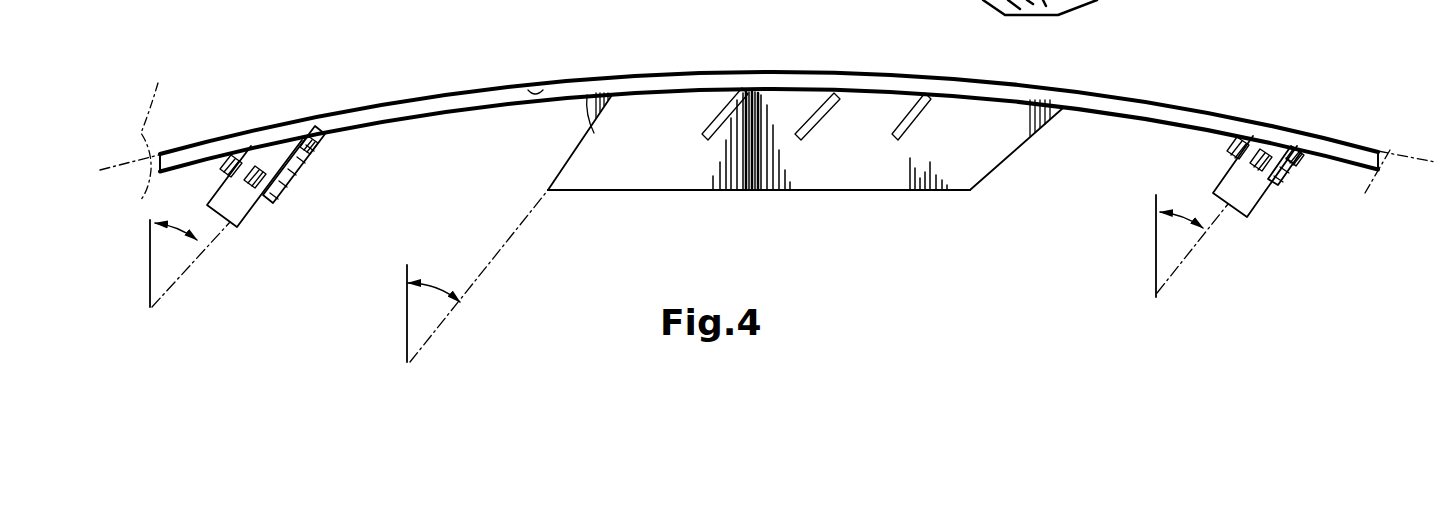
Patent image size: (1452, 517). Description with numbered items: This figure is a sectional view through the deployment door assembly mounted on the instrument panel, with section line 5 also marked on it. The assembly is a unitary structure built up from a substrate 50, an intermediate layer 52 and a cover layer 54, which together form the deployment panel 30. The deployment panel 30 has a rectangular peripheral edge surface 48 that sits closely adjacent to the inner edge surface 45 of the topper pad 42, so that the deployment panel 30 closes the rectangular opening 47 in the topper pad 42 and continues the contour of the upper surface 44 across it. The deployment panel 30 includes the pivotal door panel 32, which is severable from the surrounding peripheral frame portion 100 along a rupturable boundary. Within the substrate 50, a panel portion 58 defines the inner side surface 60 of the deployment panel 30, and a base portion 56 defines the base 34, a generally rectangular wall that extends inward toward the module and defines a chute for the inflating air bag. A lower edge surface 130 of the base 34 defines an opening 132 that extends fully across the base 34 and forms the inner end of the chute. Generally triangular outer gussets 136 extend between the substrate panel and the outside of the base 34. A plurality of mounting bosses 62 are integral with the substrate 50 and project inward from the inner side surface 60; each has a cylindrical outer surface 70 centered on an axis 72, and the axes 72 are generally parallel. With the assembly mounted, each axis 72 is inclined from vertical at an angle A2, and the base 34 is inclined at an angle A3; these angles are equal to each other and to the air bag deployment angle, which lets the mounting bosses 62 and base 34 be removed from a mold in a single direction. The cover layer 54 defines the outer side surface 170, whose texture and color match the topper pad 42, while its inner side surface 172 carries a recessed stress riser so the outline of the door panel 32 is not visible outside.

The deployment panel 30 is at (418, 96).
The peripheral frame portion 100 is at (1163, 107).
The door panel 32 is at (837, 73).
The base 34 is at (604, 181).
The topper pad 42 is at (104, 160).
The upper surface 44 is at (153, 130).
The inner edge surface 45 is at (146, 200).
The rectangular opening 47 is at (205, 106).
The peripheral edge surface 48 is at (160, 155).
The substrate 50 is at (469, 114).
The intermediate layer 52 is at (343, 118).
The cover layer 54 is at (465, 92).
The base portion 56 is at (673, 168).
The panel portion 58 is at (382, 132).
The inner side surface 60 is at (428, 124).
The mounting bosses 62 is at (280, 198).
The cylindrical outer surface 70 is at (244, 218).
The axis 72 is at (183, 275).
The lower edge surface 130 is at (757, 190).
The opening 132 is at (790, 200).
The outer gussets 136 is at (713, 125).
The outer side surface 170 is at (513, 90).
The inner side surface 172 is at (545, 84).
The angle A2 is at (168, 232).
The angle A3 is at (457, 290).
The section line 5 is at (100, 388).